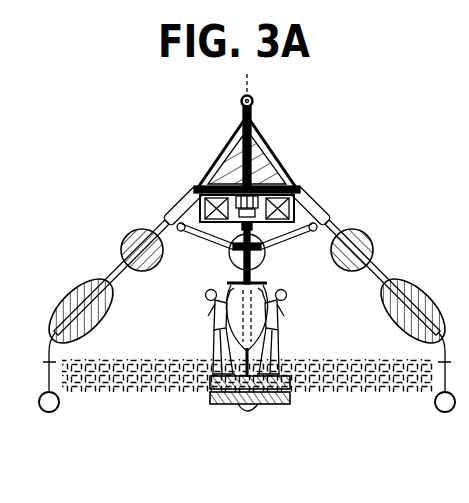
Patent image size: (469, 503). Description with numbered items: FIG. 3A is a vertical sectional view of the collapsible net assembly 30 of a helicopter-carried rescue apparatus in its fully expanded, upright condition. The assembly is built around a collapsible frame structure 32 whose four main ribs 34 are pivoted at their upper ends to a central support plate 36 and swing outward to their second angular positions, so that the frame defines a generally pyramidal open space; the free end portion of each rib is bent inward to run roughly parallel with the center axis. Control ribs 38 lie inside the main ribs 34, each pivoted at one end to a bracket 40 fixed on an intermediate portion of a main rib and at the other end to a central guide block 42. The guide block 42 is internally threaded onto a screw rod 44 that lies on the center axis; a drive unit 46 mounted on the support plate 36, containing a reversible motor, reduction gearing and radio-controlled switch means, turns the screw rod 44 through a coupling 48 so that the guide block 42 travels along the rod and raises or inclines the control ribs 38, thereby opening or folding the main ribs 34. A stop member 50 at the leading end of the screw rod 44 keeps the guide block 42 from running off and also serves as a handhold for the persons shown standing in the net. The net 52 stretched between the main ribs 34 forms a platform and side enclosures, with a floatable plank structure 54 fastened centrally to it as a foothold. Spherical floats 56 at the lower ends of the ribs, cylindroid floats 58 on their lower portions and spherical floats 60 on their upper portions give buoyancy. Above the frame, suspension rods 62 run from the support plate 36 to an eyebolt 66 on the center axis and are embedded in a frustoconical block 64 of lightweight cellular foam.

The collapsible net assembly 30 is at (138, 156).
The collapsible frame structure 32 is at (342, 222).
The main ribs 34 is at (114, 272).
The central support plate 36 is at (196, 194).
The control ribs 38 is at (177, 231).
The bracket 40 is at (174, 214).
The guide block 42 is at (266, 255).
The screw rod 44 is at (268, 282).
The drive unit 46 is at (303, 198).
The coupling 48 is at (233, 247).
The stop member 50 is at (285, 293).
The net 52 is at (336, 400).
The plank structure 54 is at (222, 408).
The spherical floats 56 is at (56, 410).
The cylindroid floats 58 is at (66, 302).
The spherical floats 60 is at (137, 238).
The suspension rods 62 is at (226, 152).
The panel 64 is at (283, 158).
The eyebolt 66 is at (240, 102).